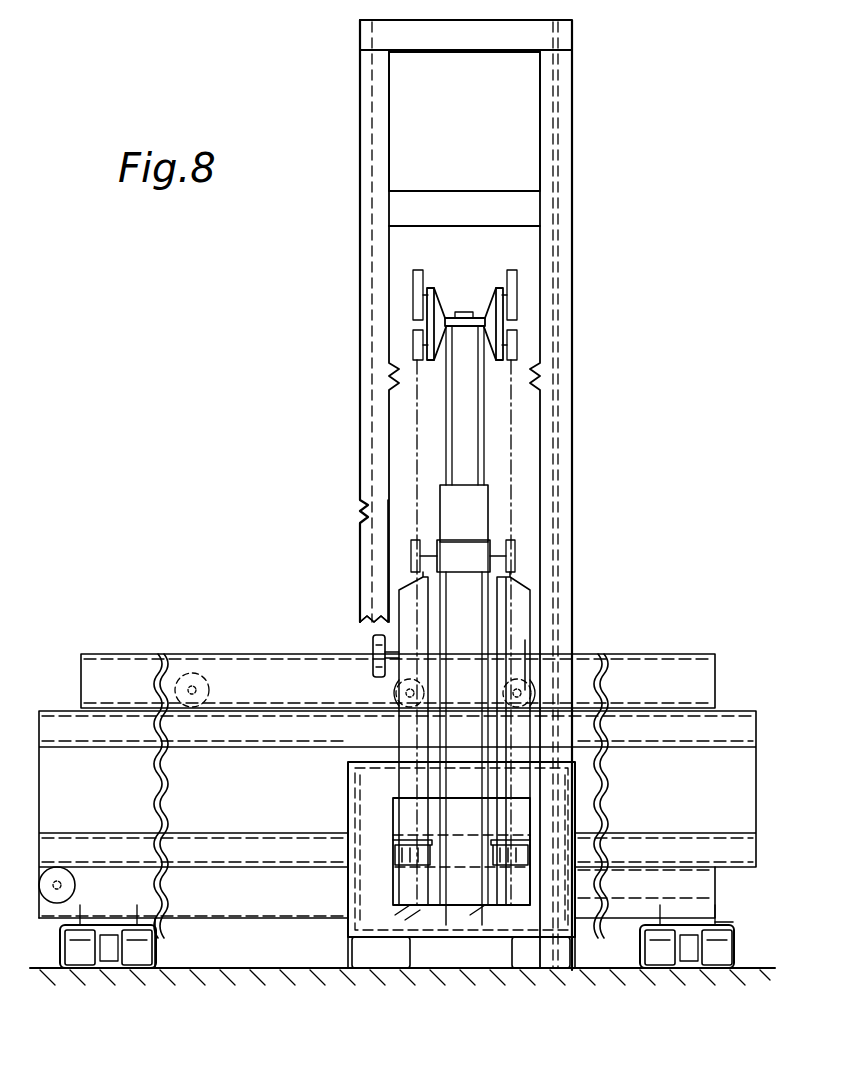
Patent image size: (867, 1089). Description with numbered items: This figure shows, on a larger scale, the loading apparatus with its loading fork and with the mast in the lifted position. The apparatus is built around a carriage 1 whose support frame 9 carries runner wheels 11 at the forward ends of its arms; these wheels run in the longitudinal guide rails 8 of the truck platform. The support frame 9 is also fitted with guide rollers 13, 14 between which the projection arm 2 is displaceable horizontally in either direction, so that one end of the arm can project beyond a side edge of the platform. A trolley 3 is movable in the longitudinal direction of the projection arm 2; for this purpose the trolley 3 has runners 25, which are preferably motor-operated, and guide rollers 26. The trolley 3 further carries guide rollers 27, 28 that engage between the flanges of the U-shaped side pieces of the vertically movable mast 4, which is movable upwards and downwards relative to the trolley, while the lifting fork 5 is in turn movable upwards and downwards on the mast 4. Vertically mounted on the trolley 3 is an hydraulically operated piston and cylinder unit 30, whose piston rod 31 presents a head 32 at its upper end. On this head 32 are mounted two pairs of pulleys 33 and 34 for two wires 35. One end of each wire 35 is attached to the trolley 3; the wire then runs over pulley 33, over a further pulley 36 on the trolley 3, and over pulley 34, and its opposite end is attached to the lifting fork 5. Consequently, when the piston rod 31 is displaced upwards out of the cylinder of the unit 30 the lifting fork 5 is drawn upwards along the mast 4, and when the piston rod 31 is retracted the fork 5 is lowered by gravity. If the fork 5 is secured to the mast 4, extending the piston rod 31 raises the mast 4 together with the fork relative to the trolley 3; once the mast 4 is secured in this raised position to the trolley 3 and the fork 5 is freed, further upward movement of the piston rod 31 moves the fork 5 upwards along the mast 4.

The carriage 1 is at (245, 654).
The projection arm 2 is at (720, 714).
The trolley 3 is at (528, 602).
The mast 4 is at (574, 278).
The lifting fork 5 is at (578, 820).
The guide rails 8 is at (158, 958).
The support frame 9 is at (402, 926).
The runner wheels 11 is at (130, 955).
The guide roller 13 is at (188, 682).
The guide roller 14 is at (57, 868).
The runners 25 is at (398, 698).
The guide rollers 26 is at (405, 848).
The guide roller 27 is at (374, 642).
The guide roller 28 is at (350, 900).
The piston and cylinder unit 30 is at (470, 510).
The piston rod 31 is at (466, 455).
The head 32 is at (486, 312).
The pulleys 33 is at (512, 270).
The pulleys 34 is at (413, 342).
The wires 35 is at (415, 432).
The pulley 36 is at (514, 560).